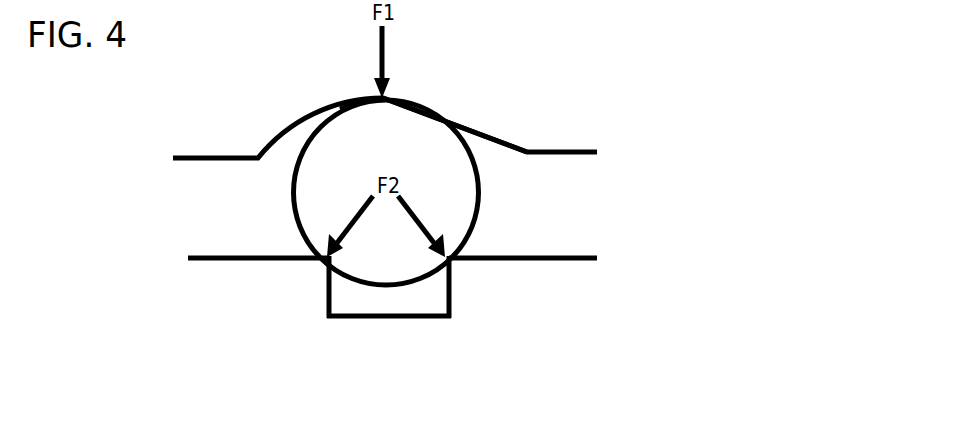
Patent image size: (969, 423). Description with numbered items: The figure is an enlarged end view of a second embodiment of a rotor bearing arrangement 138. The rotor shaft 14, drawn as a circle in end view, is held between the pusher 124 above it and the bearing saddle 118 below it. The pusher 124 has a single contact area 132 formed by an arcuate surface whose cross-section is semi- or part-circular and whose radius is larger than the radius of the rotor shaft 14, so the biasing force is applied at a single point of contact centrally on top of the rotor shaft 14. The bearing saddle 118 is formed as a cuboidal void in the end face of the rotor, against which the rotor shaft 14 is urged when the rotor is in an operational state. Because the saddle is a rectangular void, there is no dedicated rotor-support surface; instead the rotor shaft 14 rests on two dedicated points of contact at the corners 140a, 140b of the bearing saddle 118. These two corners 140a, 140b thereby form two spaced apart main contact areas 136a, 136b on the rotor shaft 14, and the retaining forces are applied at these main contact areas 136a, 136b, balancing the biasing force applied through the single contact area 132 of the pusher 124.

The rotor shaft 14 is at (482, 187).
The bearing saddle 118 is at (400, 323).
The pusher 124 is at (217, 112).
The single contact area 132 is at (345, 100).
The main contact area 136a is at (322, 270).
The main contact area 136b is at (453, 270).
The rotor bearing arrangement 138 is at (567, 95).
The corner 140a is at (295, 268).
The corner 140b is at (488, 278).